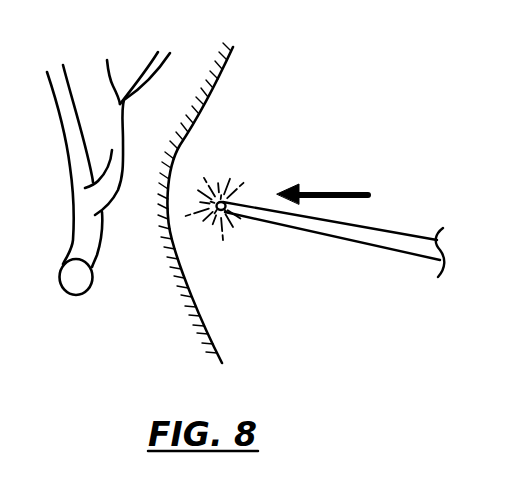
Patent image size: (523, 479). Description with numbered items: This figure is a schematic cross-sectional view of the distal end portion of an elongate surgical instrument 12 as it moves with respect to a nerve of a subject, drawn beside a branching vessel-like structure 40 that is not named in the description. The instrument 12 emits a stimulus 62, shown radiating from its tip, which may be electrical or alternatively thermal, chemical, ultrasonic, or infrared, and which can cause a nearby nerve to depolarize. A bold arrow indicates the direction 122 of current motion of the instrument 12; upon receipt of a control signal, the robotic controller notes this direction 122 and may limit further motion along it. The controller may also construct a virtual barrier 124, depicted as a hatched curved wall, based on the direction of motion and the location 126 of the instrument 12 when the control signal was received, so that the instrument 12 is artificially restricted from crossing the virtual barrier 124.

The elongate surgical instrument 12 is at (407, 235).
The blood vessel 40 is at (80, 296).
The stimulus 62 is at (238, 177).
The direction of current motion 122 is at (333, 192).
The virtual barrier 124 is at (227, 63).
The location of the instrument 126 is at (245, 238).